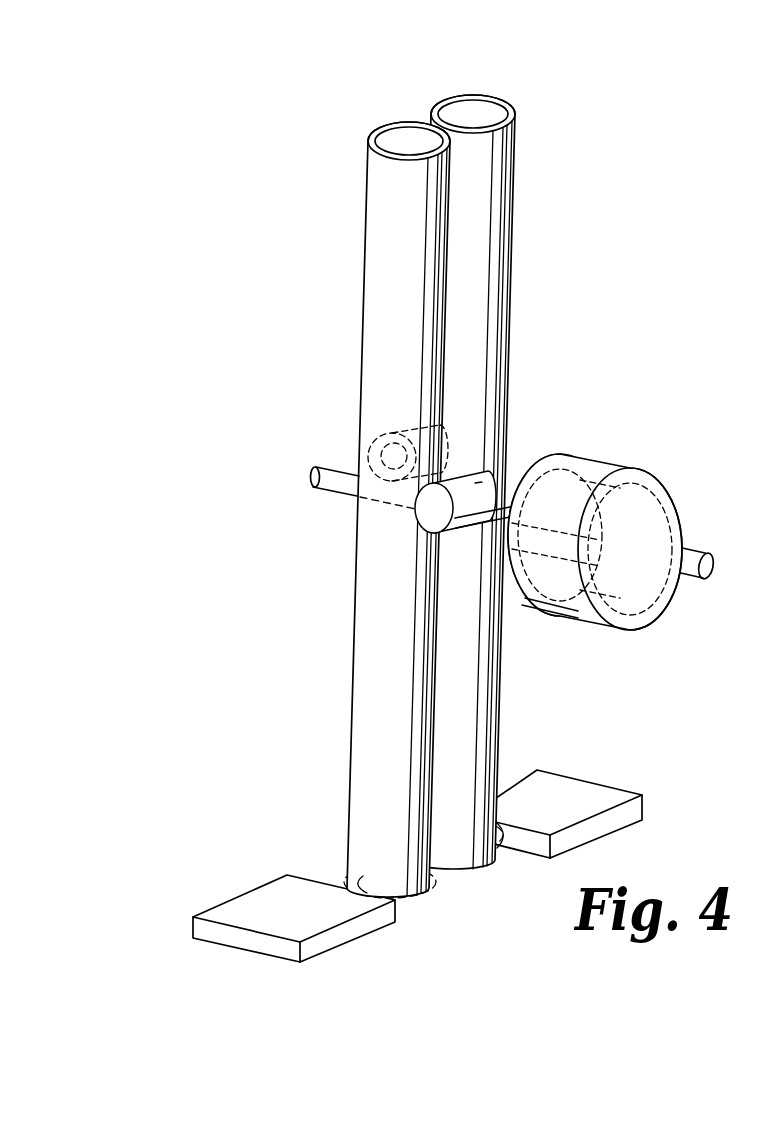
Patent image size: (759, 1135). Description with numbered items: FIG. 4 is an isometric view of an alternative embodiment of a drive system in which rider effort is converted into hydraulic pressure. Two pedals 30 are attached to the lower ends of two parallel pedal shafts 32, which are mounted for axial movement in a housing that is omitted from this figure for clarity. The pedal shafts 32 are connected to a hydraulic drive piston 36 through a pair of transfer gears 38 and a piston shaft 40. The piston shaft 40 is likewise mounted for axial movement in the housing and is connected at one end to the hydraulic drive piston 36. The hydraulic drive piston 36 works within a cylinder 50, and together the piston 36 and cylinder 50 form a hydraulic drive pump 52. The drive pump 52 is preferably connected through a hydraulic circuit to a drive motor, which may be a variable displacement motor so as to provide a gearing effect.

The pedal 30 is at (237, 907).
The pedal shaft 32 is at (372, 690).
The hydraulic drive piston 36 is at (590, 470).
The transfer gear 38 is at (393, 432).
The piston shaft 40 is at (338, 482).
The cylinder 50 is at (582, 618).
The hydraulic drive pump 52 is at (656, 460).